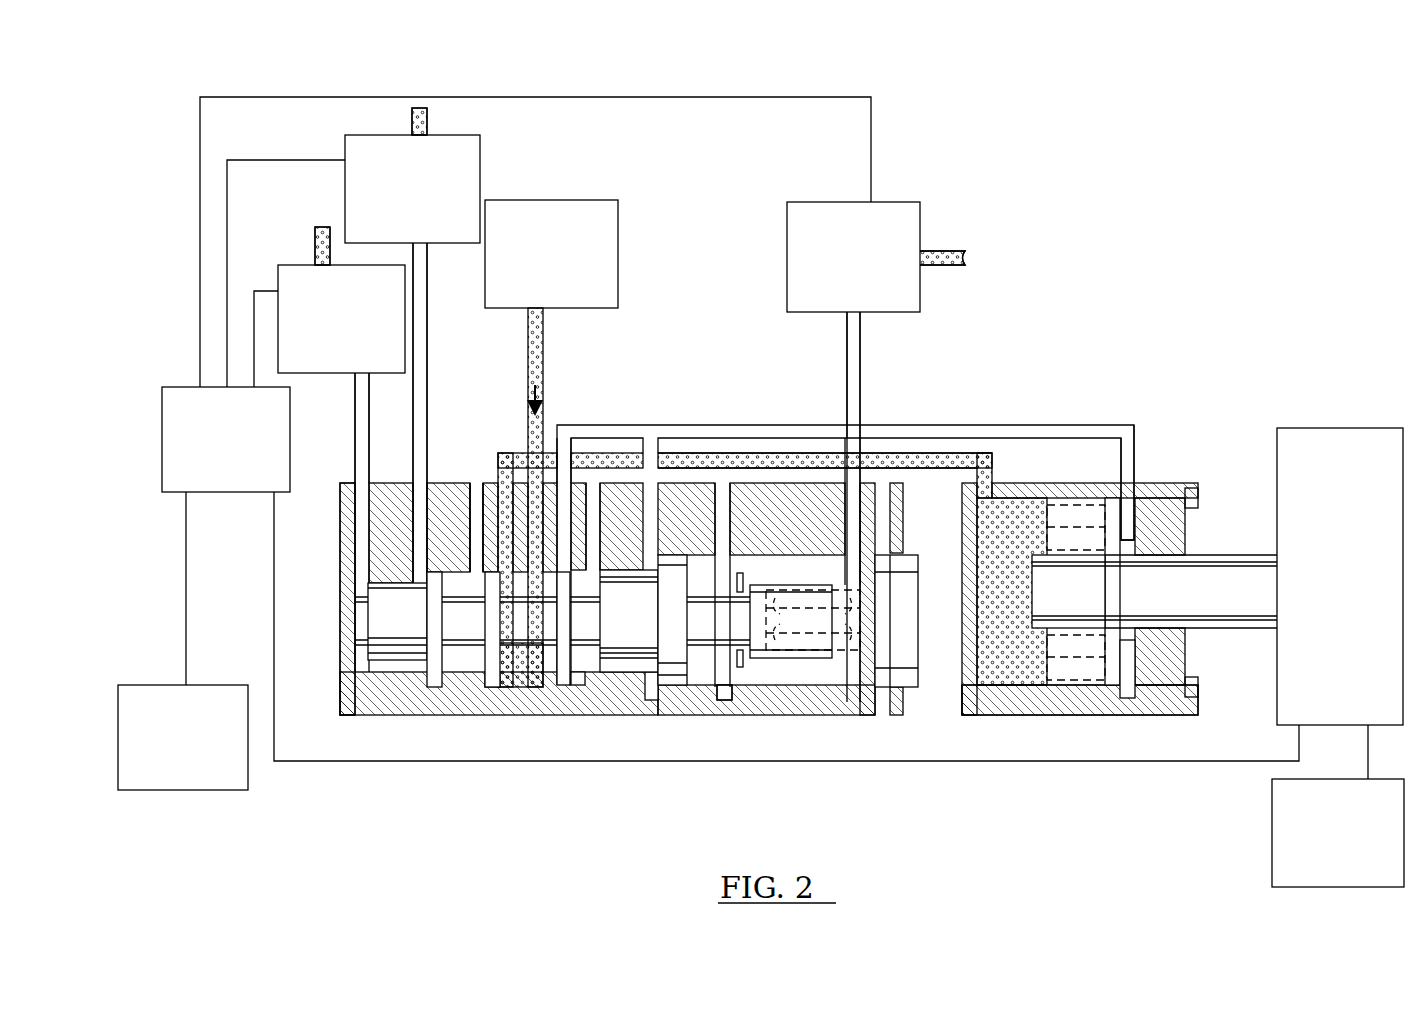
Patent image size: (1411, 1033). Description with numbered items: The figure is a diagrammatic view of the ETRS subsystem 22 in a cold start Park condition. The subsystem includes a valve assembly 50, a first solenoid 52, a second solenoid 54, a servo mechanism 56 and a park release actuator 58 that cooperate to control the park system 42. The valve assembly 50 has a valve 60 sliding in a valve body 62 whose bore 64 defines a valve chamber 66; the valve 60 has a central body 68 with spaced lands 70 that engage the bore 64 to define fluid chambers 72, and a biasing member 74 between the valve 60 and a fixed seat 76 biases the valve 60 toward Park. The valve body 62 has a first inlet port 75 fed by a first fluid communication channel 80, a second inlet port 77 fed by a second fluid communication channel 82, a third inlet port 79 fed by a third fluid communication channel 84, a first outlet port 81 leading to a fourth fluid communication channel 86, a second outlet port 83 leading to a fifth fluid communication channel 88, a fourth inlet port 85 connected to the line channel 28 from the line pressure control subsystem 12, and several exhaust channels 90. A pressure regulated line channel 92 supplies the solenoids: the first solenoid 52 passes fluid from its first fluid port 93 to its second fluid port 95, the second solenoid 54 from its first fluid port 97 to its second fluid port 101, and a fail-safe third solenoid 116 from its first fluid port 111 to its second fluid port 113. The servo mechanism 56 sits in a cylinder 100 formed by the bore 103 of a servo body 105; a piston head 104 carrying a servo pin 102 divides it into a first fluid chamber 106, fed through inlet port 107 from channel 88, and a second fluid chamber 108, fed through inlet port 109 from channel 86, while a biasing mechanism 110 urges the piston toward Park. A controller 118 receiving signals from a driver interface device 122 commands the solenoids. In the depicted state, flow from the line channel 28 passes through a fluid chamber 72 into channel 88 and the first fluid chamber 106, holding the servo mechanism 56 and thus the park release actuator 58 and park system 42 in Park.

The line pressure control subsystem 12 is at (619, 236).
The ETRS subsystem 22 is at (1095, 185).
The line channel 28 is at (543, 352).
The park system 42 is at (1271, 843).
The valve assembly 50 is at (338, 690).
The first solenoid 52 is at (280, 283).
The second solenoid 54 is at (786, 252).
The servo mechanism 56 is at (1175, 490).
The park release actuator 58 is at (1340, 427).
The valve 60 is at (580, 635).
The valve body 62 is at (628, 705).
The bore 64 is at (700, 690).
The valve chamber 66 is at (722, 690).
The central body 68 is at (460, 635).
The lands 70 is at (437, 665).
The fluid chambers 72 is at (590, 665).
The biasing member 74 is at (838, 652).
The first inlet port 75 is at (368, 483).
The seat 76 is at (908, 690).
The second inlet port 77 is at (862, 480).
The third inlet port 79 is at (470, 495).
The first fluid communication channel 80 is at (368, 412).
The first outlet port 81 is at (575, 470).
The second fluid communication channel 82 is at (860, 330).
The second outlet port 83 is at (518, 458).
The third fluid communication channel 84 is at (427, 355).
The fourth inlet port 85 is at (540, 470).
The fourth fluid communication channel 86 is at (715, 468).
The fifth fluid communication channel 88 is at (705, 455).
The exhaust channels 90 is at (480, 515).
The pressure regulated line channel 92 is at (427, 110).
The first fluid port 93 is at (316, 250).
The second fluid port 95 is at (366, 373).
The first fluid port 97 is at (935, 265).
The cylinder 100 is at (1030, 690).
The second fluid port 101 is at (846, 318).
The servo pin 102 is at (1230, 555).
The bore 103 is at (1030, 530).
The piston head 104 is at (1108, 550).
The servo body 105 is at (1182, 700).
The first fluid chamber 106 is at (985, 605).
The inlet port 107 is at (983, 470).
The second fluid chamber 108 is at (1122, 678).
The inlet port 109 is at (1128, 490).
The biasing mechanism 110 is at (1073, 652).
The first fluid port 111 is at (414, 125).
The second fluid port 113 is at (427, 262).
The valve 116 is at (481, 166).
The pump 118 is at (238, 495).
The driver interface device 122 is at (250, 787).